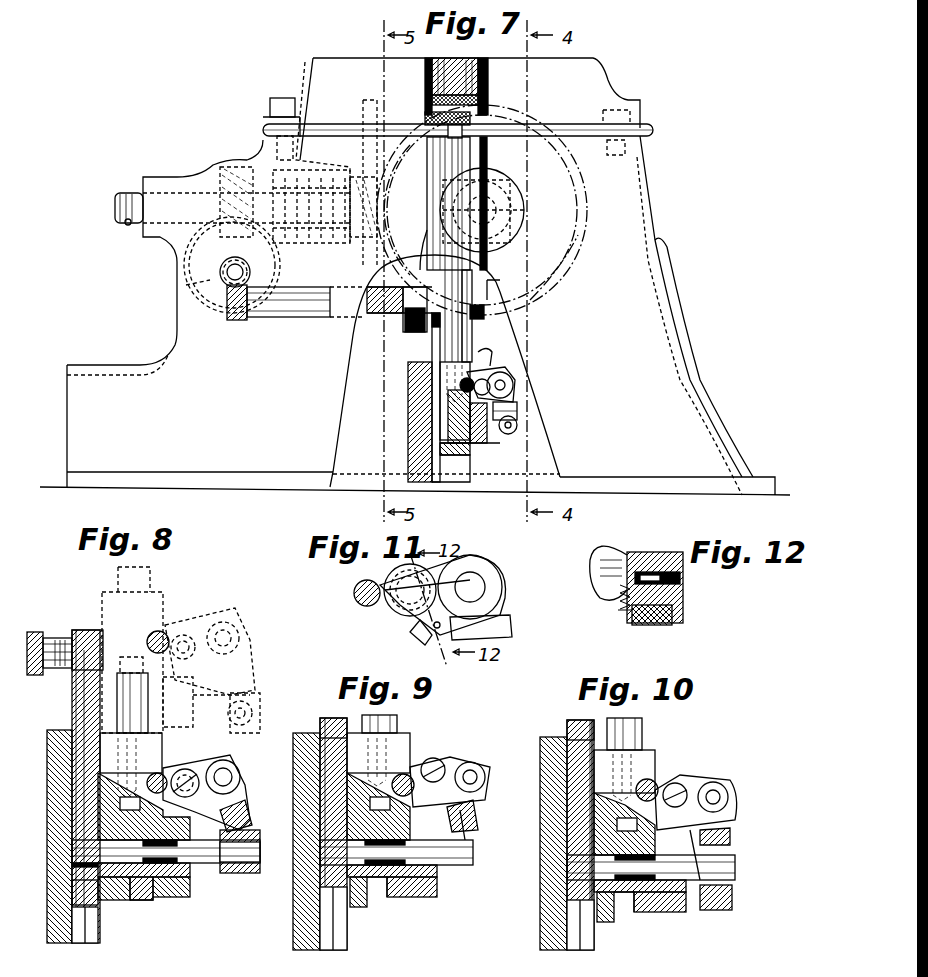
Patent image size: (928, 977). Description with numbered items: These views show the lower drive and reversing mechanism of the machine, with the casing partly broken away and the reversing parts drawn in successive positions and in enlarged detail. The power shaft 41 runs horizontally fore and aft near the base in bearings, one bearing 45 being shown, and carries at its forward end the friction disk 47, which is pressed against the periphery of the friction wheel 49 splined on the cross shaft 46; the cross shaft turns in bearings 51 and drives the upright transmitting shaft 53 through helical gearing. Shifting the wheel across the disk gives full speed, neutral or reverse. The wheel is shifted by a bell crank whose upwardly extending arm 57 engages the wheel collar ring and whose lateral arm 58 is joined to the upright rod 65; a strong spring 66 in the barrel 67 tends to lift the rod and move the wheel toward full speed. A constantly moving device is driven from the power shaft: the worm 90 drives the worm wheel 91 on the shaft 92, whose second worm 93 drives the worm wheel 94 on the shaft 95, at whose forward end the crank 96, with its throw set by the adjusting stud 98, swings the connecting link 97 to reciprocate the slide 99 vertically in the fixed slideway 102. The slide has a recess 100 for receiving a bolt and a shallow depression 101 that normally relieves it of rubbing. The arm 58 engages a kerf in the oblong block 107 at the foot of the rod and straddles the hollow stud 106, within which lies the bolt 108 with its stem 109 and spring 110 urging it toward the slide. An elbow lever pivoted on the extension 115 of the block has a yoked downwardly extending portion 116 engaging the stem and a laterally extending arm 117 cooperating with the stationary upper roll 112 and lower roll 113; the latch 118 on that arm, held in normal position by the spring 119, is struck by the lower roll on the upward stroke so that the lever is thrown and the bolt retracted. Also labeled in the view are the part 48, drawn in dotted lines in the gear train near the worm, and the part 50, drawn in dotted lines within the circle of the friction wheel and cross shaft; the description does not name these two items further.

In FIG. 7, the power shaft 41 is at (130, 205).
In FIG. 7, the bearing 45 is at (173, 185).
In FIG. 7, the cross shaft 46 is at (524, 212).
In FIG. 7, the friction disk 47 is at (372, 125).
In FIG. 7, the worm gear 48 is at (305, 243).
In FIG. 7, the friction wheel 49 is at (559, 267).
In FIG. 7, the hub 50 is at (488, 196).
In FIG. 7, the bearings 51 is at (505, 187).
In FIG. 7, the upright transmitting shaft 53 is at (492, 358).
In FIG. 7, the upwardly extending arm 57 is at (472, 305).
In FIG. 7, the lateral arm 58 is at (462, 443).
In FIG. 8, the lateral arm 58 is at (140, 900).
In FIG. 9, the lateral arm 58 is at (365, 900).
In FIG. 10, the lateral arm 58 is at (612, 915).
In FIG. 7, the upright rod 65 is at (462, 122).
In FIG. 8, the upright rod 65 is at (128, 680).
In FIG. 9, the upright rod 65 is at (397, 720).
In FIG. 10, the upright rod 65 is at (642, 727).
In FIG. 7, the spring 66 is at (470, 100).
In FIG. 7, the barrel 67 is at (488, 70).
In FIG. 7, the worm 90 is at (236, 167).
In FIG. 7, the worm wheel 91 is at (175, 289).
In FIG. 7, the shaft 92 is at (220, 272).
In FIG. 7, the second worm 93 is at (242, 238).
In FIG. 10, the second worm 93 is at (575, 720).
In FIG. 7, the worm wheel 94 is at (237, 320).
In FIG. 7, the shaft 95 is at (315, 320).
In FIG. 7, the crank 96 is at (412, 312).
In FIG. 7, the connecting link 97 is at (410, 333).
In FIG. 8, the connecting link 97 is at (55, 632).
In FIG. 7, the adjusting stud 98 is at (427, 235).
In FIG. 7, the slide 99 is at (436, 340).
In FIG. 8, the slide 99 is at (72, 722).
In FIG. 9, the slide 99 is at (327, 718).
In FIG. 10, the slide 99 is at (580, 835).
In FIG. 7, the recess 100 is at (408, 432).
In FIG. 8, the recess 100 is at (95, 905).
In FIG. 9, the recess 100 is at (320, 858).
In FIG. 10, the recess 100 is at (567, 878).
In FIG. 8, the shallow depression 101 is at (60, 720).
In FIG. 9, the shallow depression 101 is at (320, 724).
In FIG. 10, the shallow depression 101 is at (567, 728).
In FIG. 7, the fixed slideway 102 is at (408, 452).
In FIG. 8, the fixed slideway 102 is at (80, 930).
In FIG. 9, the fixed slideway 102 is at (330, 935).
In FIG. 10, the fixed slideway 102 is at (578, 940).
In FIG. 7, the hollow stud 106 is at (482, 443).
In FIG. 8, the hollow stud 106 is at (175, 897).
In FIG. 9, the hollow stud 106 is at (420, 897).
In FIG. 10, the hollow stud 106 is at (668, 912).
In FIG. 7, the oblong block 107 is at (442, 380).
In FIG. 8, the oblong block 107 is at (150, 752).
In FIG. 9, the oblong block 107 is at (400, 748).
In FIG. 10, the oblong block 107 is at (645, 760).
In FIG. 7, the bolt 108 is at (408, 405).
In FIG. 8, the bolt 108 is at (47, 838).
In FIG. 9, the bolt 108 is at (320, 845).
In FIG. 10, the bolt 108 is at (567, 860).
In FIG. 7, the stem 109 is at (517, 423).
In FIG. 8, the stem 109 is at (200, 863).
In FIG. 9, the stem 109 is at (440, 865).
In FIG. 10, the stem 109 is at (690, 880).
In FIG. 8, the spring 110 is at (150, 900).
In FIG. 7, the upper roll 112 is at (484, 312).
In FIG. 8, the upper roll 112 is at (150, 634).
In FIG. 7, the lower roll 113 is at (474, 383).
In FIG. 8, the lower roll 113 is at (165, 775).
In FIG. 11, the lower roll 113 is at (354, 600).
In FIG. 12, the lower roll 113 is at (640, 552).
In FIG. 9, the lower roll 113 is at (410, 775).
In FIG. 10, the lower roll 113 is at (652, 780).
In FIG. 7, the extension 115 is at (505, 367).
In FIG. 8, the extension 115 is at (210, 758).
In FIG. 11, the extension 115 is at (443, 595).
In FIG. 9, the extension 115 is at (480, 765).
In FIG. 10, the extension 115 is at (700, 778).
In FIG. 7, the yoked downwardly extending portion 116 is at (517, 395).
In FIG. 8, the yoked downwardly extending portion 116 is at (240, 805).
In FIG. 11, the yoked downwardly extending portion 116 is at (500, 625).
In FIG. 9, the yoked downwardly extending portion 116 is at (478, 815).
In FIG. 10, the yoked downwardly extending portion 116 is at (725, 820).
In FIG. 7, the laterally extending arm 117 is at (500, 385).
In FIG. 8, the laterally extending arm 117 is at (240, 775).
In FIG. 11, the laterally extending arm 117 is at (458, 558).
In FIG. 12, the laterally extending arm 117 is at (683, 600).
In FIG. 9, the laterally extending arm 117 is at (485, 777).
In FIG. 10, the laterally extending arm 117 is at (728, 797).
In FIG. 7, the latch 118 is at (482, 387).
In FIG. 8, the latch 118 is at (190, 800).
In FIG. 11, the latch 118 is at (395, 610).
In FIG. 12, the latch 118 is at (670, 618).
In FIG. 9, the latch 118 is at (470, 790).
In FIG. 10, the latch 118 is at (668, 785).
In FIG. 8, the spring 119 is at (250, 825).
In FIG. 11, the spring 119 is at (420, 635).
In FIG. 12, the spring 119 is at (620, 605).
In FIG. 9, the spring 119 is at (470, 832).
In FIG. 10, the spring 119 is at (700, 885).